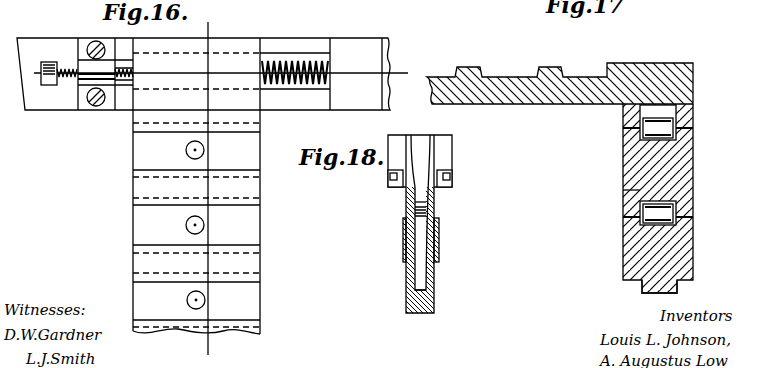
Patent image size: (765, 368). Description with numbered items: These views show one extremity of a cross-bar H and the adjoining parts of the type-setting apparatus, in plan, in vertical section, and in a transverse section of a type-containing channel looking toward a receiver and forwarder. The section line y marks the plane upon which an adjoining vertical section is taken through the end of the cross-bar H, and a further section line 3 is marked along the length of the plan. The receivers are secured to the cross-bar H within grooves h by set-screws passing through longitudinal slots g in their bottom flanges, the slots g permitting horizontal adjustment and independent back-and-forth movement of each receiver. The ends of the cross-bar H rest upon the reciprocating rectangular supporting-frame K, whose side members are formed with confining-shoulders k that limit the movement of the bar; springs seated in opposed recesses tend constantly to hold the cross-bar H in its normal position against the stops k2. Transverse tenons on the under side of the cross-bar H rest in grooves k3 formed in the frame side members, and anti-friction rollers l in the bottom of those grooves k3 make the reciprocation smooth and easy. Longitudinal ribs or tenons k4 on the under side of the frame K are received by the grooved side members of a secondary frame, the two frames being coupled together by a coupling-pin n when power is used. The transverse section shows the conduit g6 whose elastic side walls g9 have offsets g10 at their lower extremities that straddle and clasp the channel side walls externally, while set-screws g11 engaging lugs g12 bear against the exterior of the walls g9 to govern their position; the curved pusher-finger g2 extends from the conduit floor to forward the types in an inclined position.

In FIG. 16, the section line y y is at (218, 74).
In FIG. 16, the section line 3- 3 is at (204, 189).
In FIG. 16, the grooves h is at (210, 225).
In FIG. 17, the grooves h is at (542, 56).
In FIG. 16, the cross-bar H is at (211, 186).
In FIG. 17, the cross-bar H is at (693, 157).
In FIG. 16, the stops k2 is at (87, 73).
In FIG. 17, the stops k2 is at (676, 121).
In FIG. 16, the grooves k3 is at (291, 62).
In FIG. 16, the confining-shoulder k is at (352, 73).
In FIG. 16, the anti-friction rollers l is at (302, 83).
In FIG. 17, the longitudinal ribs or tenons k4 is at (693, 193).
In FIG. 17, the rectangular supporting-frame K is at (693, 223).
In FIG. 17, the coupling-pin n is at (642, 287).
In FIG. 18, the conduit g6 is at (420, 217).
In FIG. 18, the lugs g12 is at (439, 170).
In FIG. 18, the set-screws g11 is at (453, 176).
In FIG. 18, the side walls of the conduit g9 is at (437, 203).
In FIG. 18, the longitudinal slots g is at (408, 207).
In FIG. 18, the offsets g10 is at (448, 232).
In FIG. 18, the forwarding-finger or pusher-finger g2 is at (417, 277).